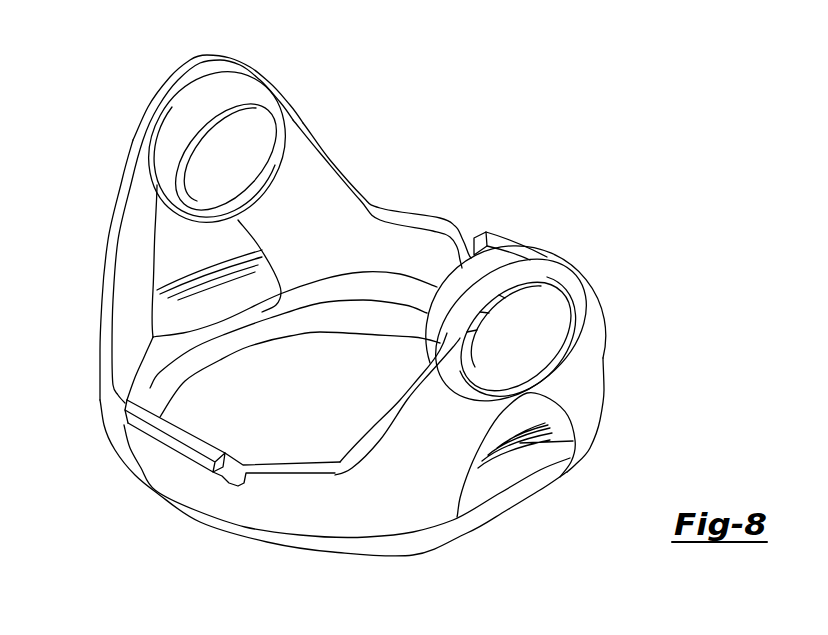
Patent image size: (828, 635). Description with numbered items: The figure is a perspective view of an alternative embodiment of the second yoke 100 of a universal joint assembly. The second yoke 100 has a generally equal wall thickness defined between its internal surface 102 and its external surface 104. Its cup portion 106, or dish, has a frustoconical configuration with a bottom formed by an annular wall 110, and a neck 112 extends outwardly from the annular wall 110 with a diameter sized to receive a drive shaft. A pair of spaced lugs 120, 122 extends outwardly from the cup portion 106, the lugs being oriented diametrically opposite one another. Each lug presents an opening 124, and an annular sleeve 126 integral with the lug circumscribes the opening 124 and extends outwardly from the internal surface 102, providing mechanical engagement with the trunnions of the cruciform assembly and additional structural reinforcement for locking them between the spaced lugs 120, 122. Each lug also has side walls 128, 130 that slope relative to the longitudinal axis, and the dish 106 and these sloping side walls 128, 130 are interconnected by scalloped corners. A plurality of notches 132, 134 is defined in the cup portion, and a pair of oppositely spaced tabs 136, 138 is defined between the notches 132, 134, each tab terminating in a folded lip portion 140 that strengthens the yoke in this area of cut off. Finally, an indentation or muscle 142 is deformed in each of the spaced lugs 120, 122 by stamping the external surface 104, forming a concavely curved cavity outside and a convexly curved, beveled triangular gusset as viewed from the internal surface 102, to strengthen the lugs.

The second yoke 100 is at (430, 159).
The internal surface 102 is at (318, 172).
The external surface 104 is at (357, 517).
The cup portion 106 is at (587, 428).
The annular wall 110 is at (327, 291).
The neck 112 is at (434, 537).
The spaced lug 120 is at (577, 362).
The spaced lug 122 is at (132, 230).
The opening 124 is at (212, 164).
The annular sleeve 126 is at (230, 95).
The side wall 128 is at (128, 158).
The side wall 130 is at (297, 110).
The notch 132 is at (220, 483).
The notch 134 is at (123, 414).
The spaced tab 136 is at (228, 455).
The spaced tab 138 is at (490, 248).
The folded lip portion 140 is at (157, 438).
The muscle 142 is at (174, 305).